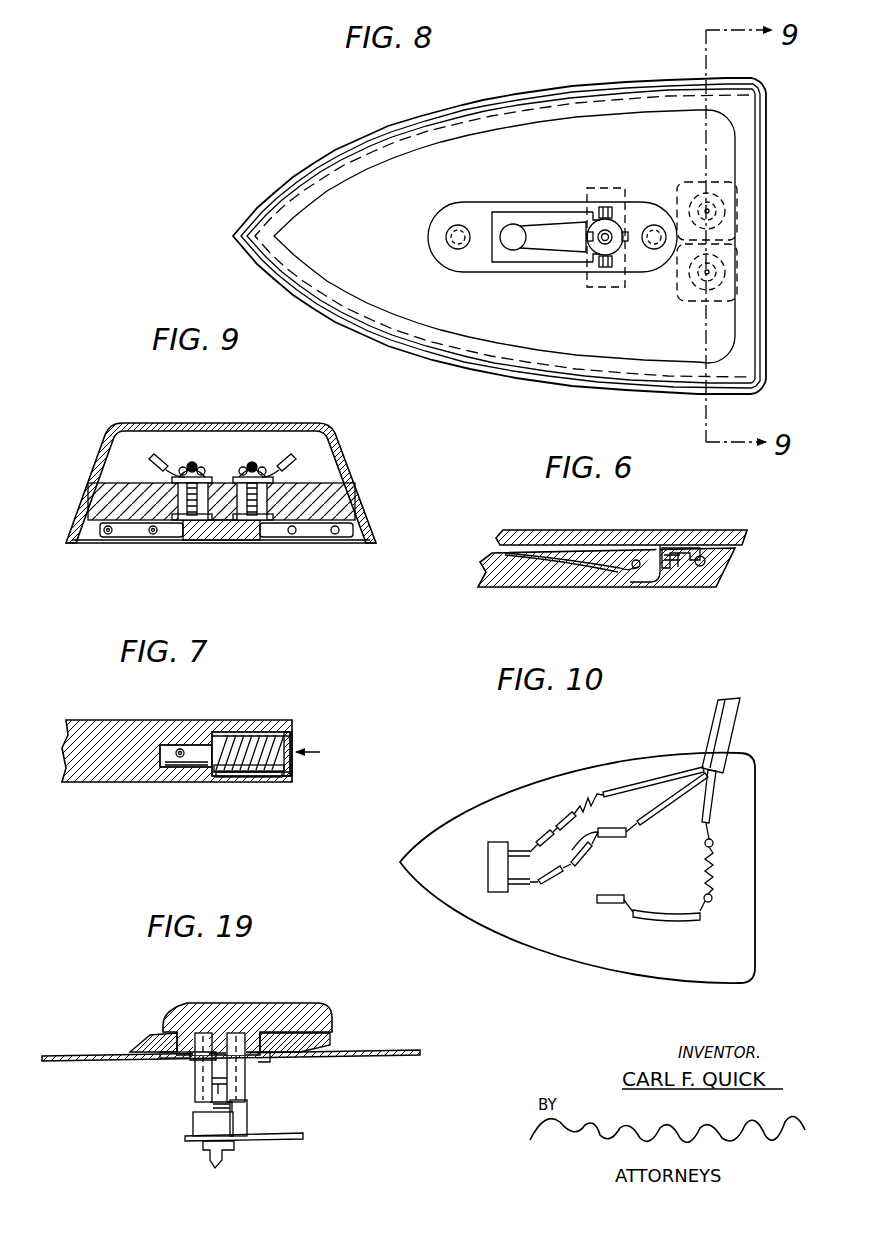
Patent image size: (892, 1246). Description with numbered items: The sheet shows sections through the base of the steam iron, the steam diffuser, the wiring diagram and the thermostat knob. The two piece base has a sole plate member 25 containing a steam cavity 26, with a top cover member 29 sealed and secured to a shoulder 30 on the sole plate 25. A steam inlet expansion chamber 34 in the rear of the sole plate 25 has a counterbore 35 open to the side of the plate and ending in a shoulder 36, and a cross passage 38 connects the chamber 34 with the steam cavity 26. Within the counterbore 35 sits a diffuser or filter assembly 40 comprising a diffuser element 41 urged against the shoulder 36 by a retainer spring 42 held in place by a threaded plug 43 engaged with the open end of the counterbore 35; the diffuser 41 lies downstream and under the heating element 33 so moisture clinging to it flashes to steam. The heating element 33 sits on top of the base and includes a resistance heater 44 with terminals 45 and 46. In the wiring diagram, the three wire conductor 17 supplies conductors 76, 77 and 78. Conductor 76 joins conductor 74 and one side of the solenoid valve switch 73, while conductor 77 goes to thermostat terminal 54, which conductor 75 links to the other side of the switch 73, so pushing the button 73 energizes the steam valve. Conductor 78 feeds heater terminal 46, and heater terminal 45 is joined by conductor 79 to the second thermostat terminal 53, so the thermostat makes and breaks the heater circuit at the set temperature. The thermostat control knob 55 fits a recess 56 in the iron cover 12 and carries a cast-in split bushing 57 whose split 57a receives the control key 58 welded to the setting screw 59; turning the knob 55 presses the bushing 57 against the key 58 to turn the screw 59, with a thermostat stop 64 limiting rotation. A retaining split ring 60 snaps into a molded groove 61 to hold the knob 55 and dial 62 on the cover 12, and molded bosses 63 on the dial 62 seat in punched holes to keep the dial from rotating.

In FIG. 19, the iron cover 12 is at (76, 1052).
In FIG. 10, the three wire conductor 17 is at (738, 706).
In FIG. 6, the sole plate member 25 is at (728, 556).
In FIG. 6, the steam cavity 26 is at (640, 575).
In FIG. 6, the top cover member 29 is at (537, 530).
In FIG. 6, the shoulder 30 is at (673, 548).
In FIG. 9, the heating element 33 is at (240, 541).
In FIG. 6, the steam inlet expansion chamber 34 is at (706, 563).
In FIG. 7, the steam inlet expansion chamber 34 is at (172, 766).
In FIG. 7, the counterbore 35 is at (250, 735).
In FIG. 7, the shoulder 36 is at (200, 748).
In FIG. 6, the cross passage 38 is at (678, 570).
In FIG. 7, the cross passage 38 is at (180, 749).
In FIG. 7, the diffuser or filter assembly 40 is at (323, 752).
In FIG. 7, the diffuser element 41 is at (207, 776).
In FIG. 7, the retainer spring 42 is at (240, 778).
In FIG. 7, the threaded plug 43 is at (292, 770).
In FIG. 9, the resistance heater 44 is at (151, 539).
In FIG. 9, the heater terminal 45 is at (193, 466).
In FIG. 10, the heater terminal 45 is at (712, 898).
In FIG. 9, the heater terminal 46 is at (253, 466).
In FIG. 10, the heater terminal 46 is at (713, 843).
In FIG. 10, the thermostat terminal 53 is at (612, 904).
In FIG. 10, the thermostat terminal 54 is at (612, 838).
In FIG. 19, the thermostat control knob 55 is at (228, 1003).
In FIG. 19, the recess 56 is at (252, 1060).
In FIG. 19, the split bushing 57 is at (242, 1085).
In FIG. 19, the split 57a is at (214, 1088).
In FIG. 19, the control key 58 is at (216, 1110).
In FIG. 19, the setting screw 59 is at (226, 1157).
In FIG. 19, the retaining split ring 60 is at (168, 1058).
In FIG. 19, the molded groove 61 is at (190, 1062).
In FIG. 19, the dial 62 is at (288, 1040).
In FIG. 19, the molded bosses 63 is at (150, 1050).
In FIG. 19, the thermostat stop 64 is at (247, 1116).
In FIG. 10, the solenoid valve switch 73 is at (490, 871).
In FIG. 10, the conductor 74 is at (560, 815).
In FIG. 10, the conductor 75 is at (552, 882).
In FIG. 10, the conductor 76 is at (658, 782).
In FIG. 10, the conductor 77 is at (652, 817).
In FIG. 9, the conductor 78 is at (292, 458).
In FIG. 10, the conductor 78 is at (712, 797).
In FIG. 9, the conductor 79 is at (152, 457).
In FIG. 10, the conductor 79 is at (658, 919).